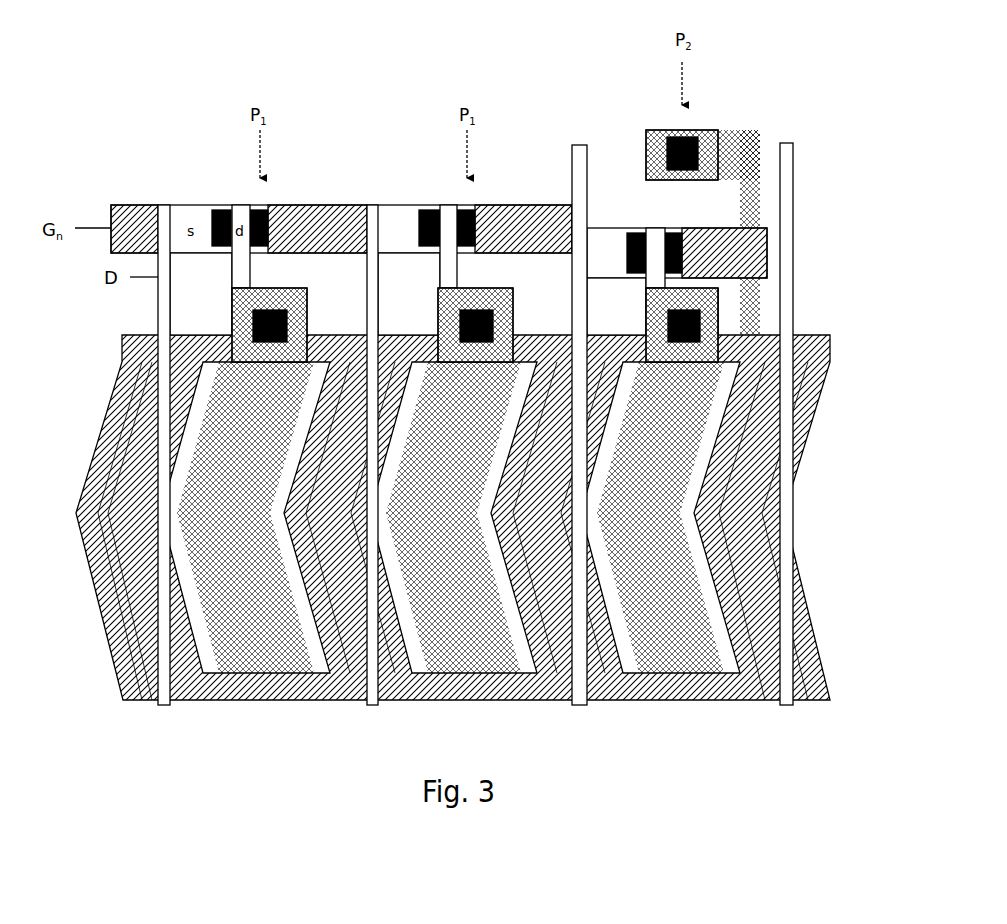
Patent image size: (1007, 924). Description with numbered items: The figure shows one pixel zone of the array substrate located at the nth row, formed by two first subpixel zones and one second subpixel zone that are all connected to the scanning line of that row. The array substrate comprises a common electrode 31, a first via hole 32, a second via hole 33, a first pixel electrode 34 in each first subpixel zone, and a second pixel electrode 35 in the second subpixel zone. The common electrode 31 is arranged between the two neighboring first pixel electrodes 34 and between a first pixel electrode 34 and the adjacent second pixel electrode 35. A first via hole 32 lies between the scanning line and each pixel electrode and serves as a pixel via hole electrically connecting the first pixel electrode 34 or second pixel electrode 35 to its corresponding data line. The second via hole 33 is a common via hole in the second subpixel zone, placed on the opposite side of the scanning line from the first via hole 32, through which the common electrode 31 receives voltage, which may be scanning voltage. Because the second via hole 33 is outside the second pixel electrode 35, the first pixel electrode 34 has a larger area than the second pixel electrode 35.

The common electrode 31 is at (763, 485).
The first via hole 32 is at (290, 322).
The second via hole 33 is at (666, 148).
The first pixel electrode 34 is at (349, 517).
The second pixel electrode 35 is at (660, 517).